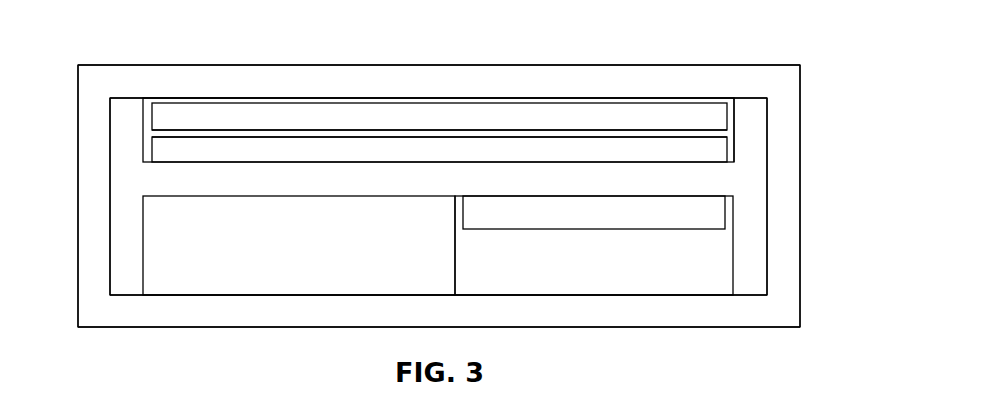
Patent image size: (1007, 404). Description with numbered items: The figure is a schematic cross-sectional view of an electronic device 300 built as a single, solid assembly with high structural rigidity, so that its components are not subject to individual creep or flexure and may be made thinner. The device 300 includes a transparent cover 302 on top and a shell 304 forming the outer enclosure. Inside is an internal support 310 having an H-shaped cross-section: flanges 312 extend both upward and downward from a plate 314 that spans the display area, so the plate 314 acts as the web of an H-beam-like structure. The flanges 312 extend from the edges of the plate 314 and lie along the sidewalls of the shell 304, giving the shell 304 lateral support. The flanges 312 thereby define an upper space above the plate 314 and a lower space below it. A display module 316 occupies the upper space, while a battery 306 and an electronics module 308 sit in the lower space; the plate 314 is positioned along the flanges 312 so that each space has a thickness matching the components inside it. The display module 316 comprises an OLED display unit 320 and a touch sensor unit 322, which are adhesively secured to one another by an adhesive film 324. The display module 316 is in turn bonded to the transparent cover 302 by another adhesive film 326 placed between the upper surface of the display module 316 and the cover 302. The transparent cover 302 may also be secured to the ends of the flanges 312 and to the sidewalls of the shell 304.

The electronic device 300 is at (761, 40).
The transparent cover 302 is at (447, 73).
The shell 304 is at (710, 327).
The battery 306 is at (299, 245).
The electronics module 308 is at (594, 212).
The internal support 310 is at (758, 168).
The flanges 312 is at (120, 235).
The plate 314 is at (581, 234).
The display module 316 is at (740, 123).
The OLED display unit 320 is at (439, 149).
The touch sensor unit 322 is at (439, 116).
The adhesive film 324 is at (317, 135).
The adhesive film 326 is at (280, 95).